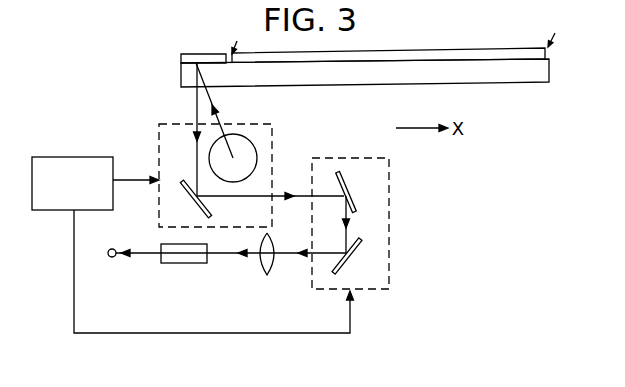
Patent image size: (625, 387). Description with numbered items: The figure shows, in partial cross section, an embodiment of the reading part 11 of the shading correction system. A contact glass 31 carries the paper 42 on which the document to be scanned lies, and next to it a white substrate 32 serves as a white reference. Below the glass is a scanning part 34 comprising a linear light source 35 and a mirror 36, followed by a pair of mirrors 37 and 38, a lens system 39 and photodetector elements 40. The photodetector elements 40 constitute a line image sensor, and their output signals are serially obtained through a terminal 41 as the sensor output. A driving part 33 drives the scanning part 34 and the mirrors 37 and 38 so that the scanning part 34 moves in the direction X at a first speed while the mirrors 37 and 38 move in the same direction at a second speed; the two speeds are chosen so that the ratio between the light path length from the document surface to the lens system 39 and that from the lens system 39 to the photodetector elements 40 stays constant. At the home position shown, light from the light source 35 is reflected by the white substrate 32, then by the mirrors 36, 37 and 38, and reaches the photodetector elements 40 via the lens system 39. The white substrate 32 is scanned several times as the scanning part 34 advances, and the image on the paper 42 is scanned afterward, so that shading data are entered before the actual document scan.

The reading part 11 is at (480, 36).
The contact glass 31 is at (549, 70).
The white substrate 32 is at (196, 55).
The paper 42 is at (509, 48).
The driving part 33 is at (75, 157).
The scanning part 34 is at (273, 125).
The linear light source 35 is at (256, 151).
The mirror 36 is at (186, 207).
The mirror 37 is at (352, 197).
The mirror 38 is at (352, 258).
The lens system 39 is at (261, 262).
The photodetector elements 40 is at (189, 264).
The terminal 41 is at (112, 258).